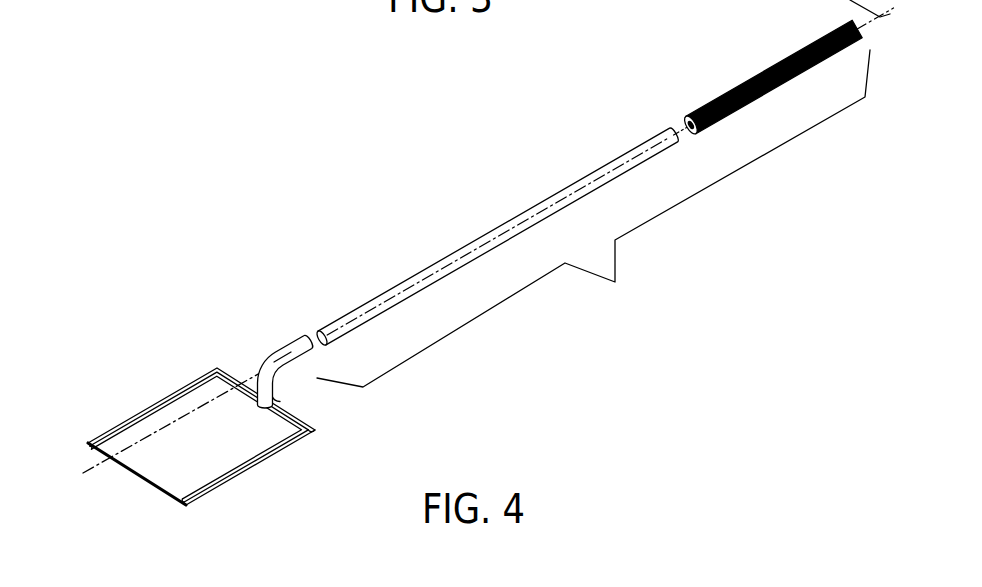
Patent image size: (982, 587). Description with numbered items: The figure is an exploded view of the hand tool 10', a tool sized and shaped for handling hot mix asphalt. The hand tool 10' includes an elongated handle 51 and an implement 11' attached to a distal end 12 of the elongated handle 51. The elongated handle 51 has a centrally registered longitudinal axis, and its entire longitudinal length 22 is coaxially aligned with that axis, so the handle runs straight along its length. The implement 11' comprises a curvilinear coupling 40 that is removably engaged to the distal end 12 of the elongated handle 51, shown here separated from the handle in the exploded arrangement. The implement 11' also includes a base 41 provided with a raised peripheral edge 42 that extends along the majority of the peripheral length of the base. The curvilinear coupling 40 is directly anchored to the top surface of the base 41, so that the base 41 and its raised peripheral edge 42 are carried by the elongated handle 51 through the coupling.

The hand tool 10' is at (339, 185).
The implement 11' is at (195, 313).
The distal end 12 is at (322, 331).
The longitudinal length 22 is at (593, 218).
The curvilinear coupling 40 is at (295, 347).
The base 41 is at (173, 470).
The raised peripheral edge 42 is at (245, 465).
The elongated handle 51 is at (585, 182).